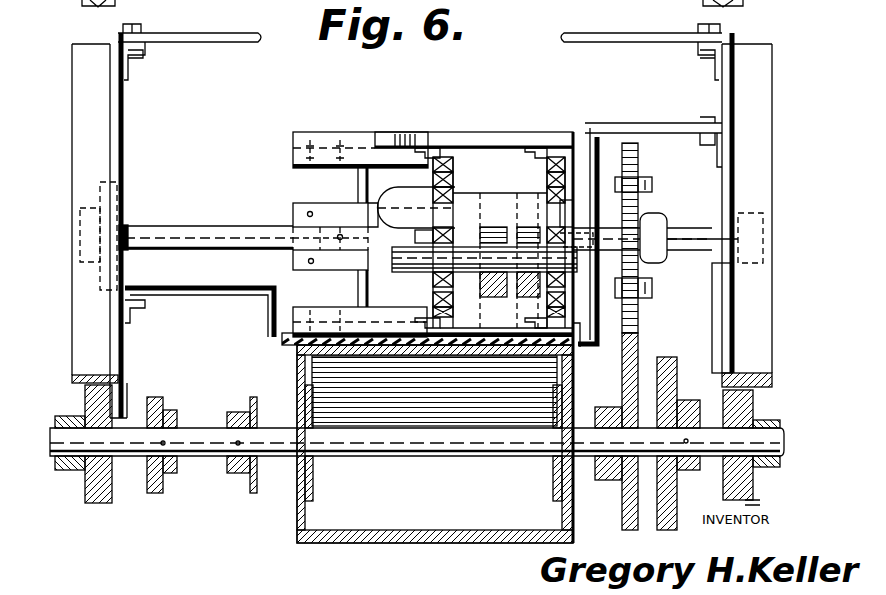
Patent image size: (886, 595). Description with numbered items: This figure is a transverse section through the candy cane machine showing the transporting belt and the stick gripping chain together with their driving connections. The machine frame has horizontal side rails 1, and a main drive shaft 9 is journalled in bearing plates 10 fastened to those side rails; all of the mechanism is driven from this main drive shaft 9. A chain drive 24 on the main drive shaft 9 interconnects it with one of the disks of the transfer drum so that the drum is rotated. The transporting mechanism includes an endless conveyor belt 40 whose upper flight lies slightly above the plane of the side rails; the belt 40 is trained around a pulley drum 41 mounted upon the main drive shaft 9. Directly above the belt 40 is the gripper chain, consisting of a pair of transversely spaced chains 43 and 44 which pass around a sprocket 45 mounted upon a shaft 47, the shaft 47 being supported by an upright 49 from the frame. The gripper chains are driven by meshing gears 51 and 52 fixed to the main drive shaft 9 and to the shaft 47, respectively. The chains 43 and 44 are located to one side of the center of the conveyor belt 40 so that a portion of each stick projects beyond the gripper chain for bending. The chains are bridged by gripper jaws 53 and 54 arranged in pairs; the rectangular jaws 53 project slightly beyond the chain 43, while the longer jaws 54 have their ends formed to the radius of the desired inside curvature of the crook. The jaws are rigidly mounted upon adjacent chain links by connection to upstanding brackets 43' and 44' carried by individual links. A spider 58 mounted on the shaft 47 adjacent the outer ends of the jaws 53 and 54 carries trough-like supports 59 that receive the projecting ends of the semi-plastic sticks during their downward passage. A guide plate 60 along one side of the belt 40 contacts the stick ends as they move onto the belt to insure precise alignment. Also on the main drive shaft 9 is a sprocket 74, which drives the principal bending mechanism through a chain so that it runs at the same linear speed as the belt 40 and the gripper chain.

The horizontal side rails 1 is at (82, 376).
The main drive shaft 9 is at (203, 437).
The bearing plates 10 is at (110, 494).
The chain drive 24 is at (252, 413).
The endless conveyor belt 40 is at (392, 544).
The pulley drum 41 is at (573, 380).
The chain 43 is at (537, 337).
The upstanding bracket 43' is at (535, 217).
The chain 44 is at (451, 242).
The upstanding bracket 44' is at (483, 217).
The sprocket 45 is at (513, 185).
The shaft 47 is at (234, 233).
The upright 49 is at (122, 348).
The gear 51 is at (638, 355).
The gear 52 is at (637, 157).
The gripper jaws 53 is at (493, 267).
The gripper jaws 54 is at (413, 205).
The spider 58 is at (300, 193).
The trough-like supports 59 is at (340, 138).
The guide plate 60 is at (580, 326).
The sprocket 74 is at (163, 490).